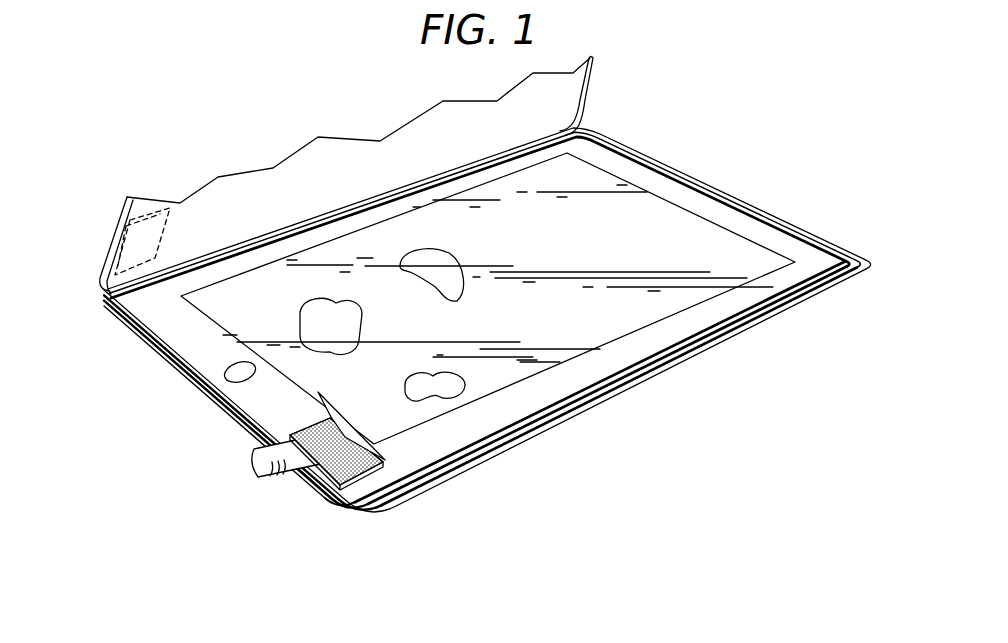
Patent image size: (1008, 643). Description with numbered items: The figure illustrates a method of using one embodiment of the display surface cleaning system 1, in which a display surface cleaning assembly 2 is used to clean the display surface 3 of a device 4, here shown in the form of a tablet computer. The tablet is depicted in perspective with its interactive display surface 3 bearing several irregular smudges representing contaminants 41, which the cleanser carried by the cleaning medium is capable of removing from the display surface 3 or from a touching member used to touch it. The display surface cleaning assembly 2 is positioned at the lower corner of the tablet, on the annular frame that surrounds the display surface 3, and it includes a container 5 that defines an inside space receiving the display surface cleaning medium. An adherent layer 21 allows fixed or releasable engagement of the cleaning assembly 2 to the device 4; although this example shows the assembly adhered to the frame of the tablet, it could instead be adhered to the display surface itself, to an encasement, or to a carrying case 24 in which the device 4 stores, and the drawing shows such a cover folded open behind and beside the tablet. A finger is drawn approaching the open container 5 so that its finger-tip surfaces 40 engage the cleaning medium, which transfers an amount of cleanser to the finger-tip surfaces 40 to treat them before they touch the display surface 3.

The display surface cleaning system 1 is at (784, 155).
The display surface cleaning assembly 2 is at (108, 252).
The display surface 3 is at (573, 254).
The device 4 is at (768, 322).
The container 5 is at (362, 493).
The adherent layer 21 is at (338, 503).
The carrying case 24 is at (646, 157).
The finger-tip surfaces 40 is at (288, 434).
The contaminants 41 is at (432, 383).